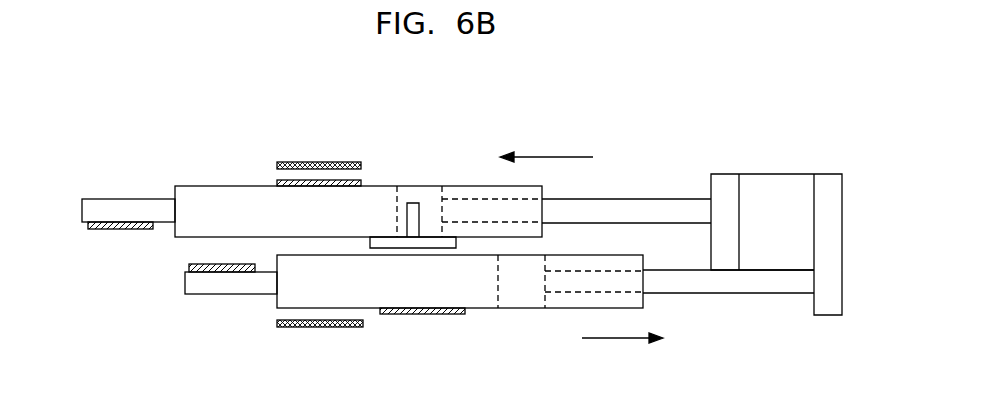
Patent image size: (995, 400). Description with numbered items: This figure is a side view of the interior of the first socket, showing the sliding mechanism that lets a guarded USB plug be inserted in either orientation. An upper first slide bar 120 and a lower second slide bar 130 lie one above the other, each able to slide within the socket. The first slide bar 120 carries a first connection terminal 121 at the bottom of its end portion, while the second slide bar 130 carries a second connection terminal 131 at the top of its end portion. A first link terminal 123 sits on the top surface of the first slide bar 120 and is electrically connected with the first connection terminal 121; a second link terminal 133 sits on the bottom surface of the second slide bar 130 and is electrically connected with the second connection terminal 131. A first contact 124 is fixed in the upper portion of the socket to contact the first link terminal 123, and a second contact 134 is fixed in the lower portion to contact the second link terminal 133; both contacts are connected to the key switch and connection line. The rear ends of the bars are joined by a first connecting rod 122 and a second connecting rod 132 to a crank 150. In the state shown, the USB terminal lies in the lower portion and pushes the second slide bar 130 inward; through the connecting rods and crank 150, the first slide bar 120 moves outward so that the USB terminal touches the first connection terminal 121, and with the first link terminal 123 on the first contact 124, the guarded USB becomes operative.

The first slide bar 120 is at (207, 186).
The first connection terminal 121 is at (88, 224).
The first connecting rod 122 is at (653, 199).
The first link terminal 123 is at (363, 182).
The first contact 124 is at (362, 164).
The second slide bar 130 is at (285, 300).
The second connection terminal 131 is at (189, 267).
The second connecting rod 132 is at (731, 296).
The second link terminal 133 is at (428, 316).
The second contact 134 is at (320, 330).
The crank 150 is at (831, 175).